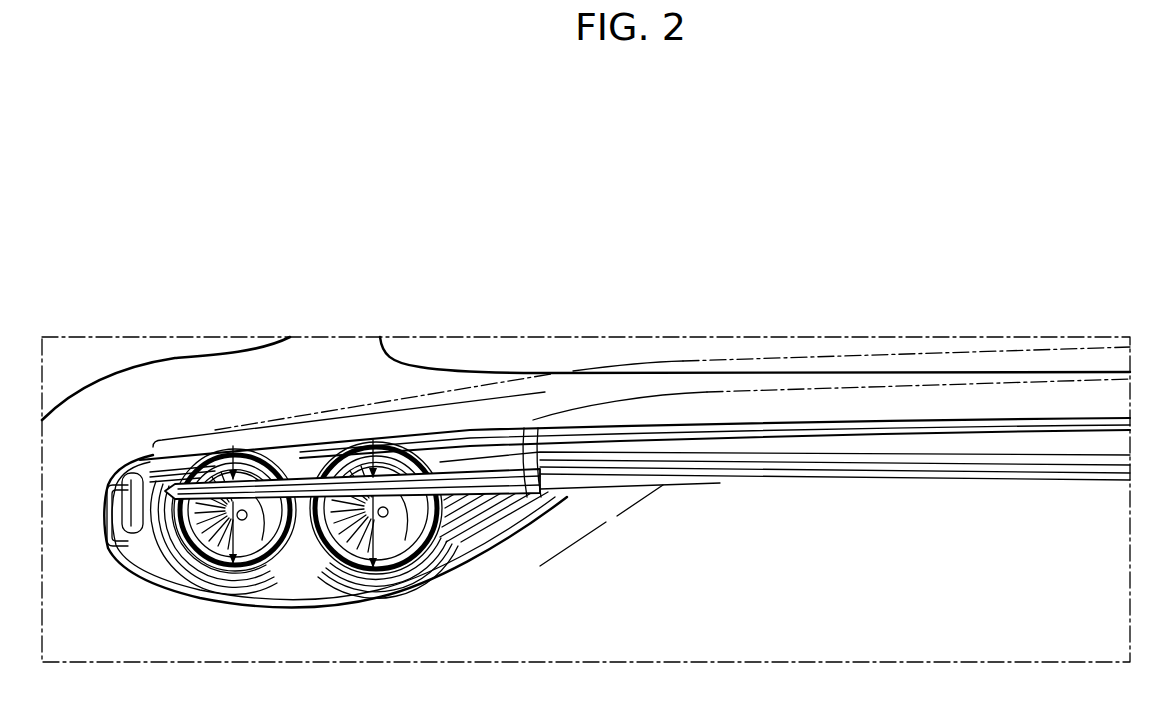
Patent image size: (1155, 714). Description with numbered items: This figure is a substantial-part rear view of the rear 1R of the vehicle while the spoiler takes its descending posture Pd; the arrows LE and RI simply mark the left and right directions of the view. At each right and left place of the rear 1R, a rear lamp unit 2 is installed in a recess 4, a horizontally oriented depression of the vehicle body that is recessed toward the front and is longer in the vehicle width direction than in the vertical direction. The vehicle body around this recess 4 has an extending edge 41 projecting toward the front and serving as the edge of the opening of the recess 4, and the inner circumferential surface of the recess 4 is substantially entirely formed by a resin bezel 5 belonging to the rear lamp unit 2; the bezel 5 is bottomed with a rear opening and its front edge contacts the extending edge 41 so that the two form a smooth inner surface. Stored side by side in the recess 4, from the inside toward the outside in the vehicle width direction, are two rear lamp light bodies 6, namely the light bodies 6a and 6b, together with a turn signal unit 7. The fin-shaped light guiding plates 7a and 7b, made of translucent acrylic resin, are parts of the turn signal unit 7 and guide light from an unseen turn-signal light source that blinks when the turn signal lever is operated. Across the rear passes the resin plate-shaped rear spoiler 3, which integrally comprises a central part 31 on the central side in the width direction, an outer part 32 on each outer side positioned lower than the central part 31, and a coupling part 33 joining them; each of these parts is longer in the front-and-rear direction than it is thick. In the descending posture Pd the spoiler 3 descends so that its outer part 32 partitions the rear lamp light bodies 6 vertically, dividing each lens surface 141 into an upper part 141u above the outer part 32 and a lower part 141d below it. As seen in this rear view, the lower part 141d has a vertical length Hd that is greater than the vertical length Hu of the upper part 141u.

The rear of the vehicle 1R is at (122, 322).
The left direction LE is at (385, 262).
The right direction RI is at (404, 263).
The rear lamp unit 2 is at (328, 613).
The rear spoiler 3 is at (850, 388).
The central part 31 is at (927, 482).
The outer part 32 is at (306, 470).
The coupling part 33 is at (525, 429).
The recess 4 is at (294, 604).
The extending edge 41 is at (108, 484).
The bezel 5 is at (128, 535).
The rear lamp light body 6 is at (301, 509).
The rear lamp light body 6a is at (405, 570).
The rear lamp light body 6b is at (212, 560).
The turn signal unit 7 is at (137, 466).
The fin-shaped light guiding plate 7a is at (155, 460).
The fin-shaped light guiding plate 7b is at (122, 513).
The lens surface 141 is at (260, 566).
The upper part of lens surface 141u is at (216, 466).
The lower part of lens surface 141d is at (430, 646).
The length of upper part Hu is at (236, 476).
The length of lower part Hd is at (236, 572).
The descending posture Pd is at (1052, 484).